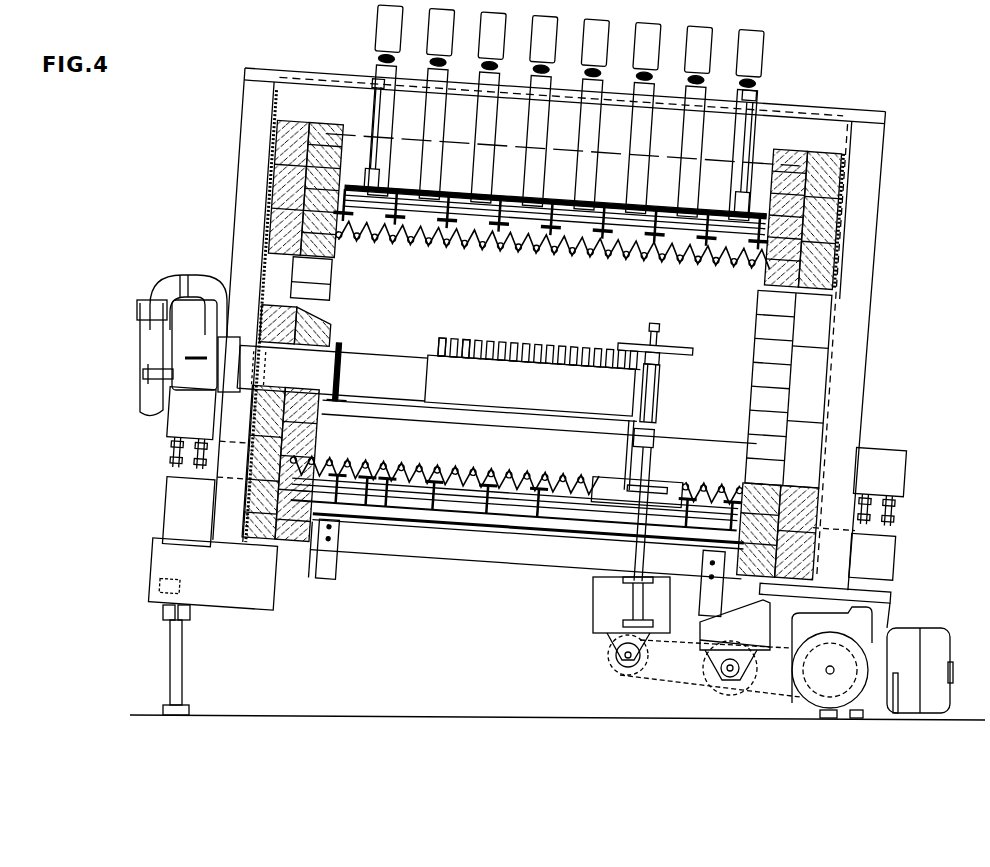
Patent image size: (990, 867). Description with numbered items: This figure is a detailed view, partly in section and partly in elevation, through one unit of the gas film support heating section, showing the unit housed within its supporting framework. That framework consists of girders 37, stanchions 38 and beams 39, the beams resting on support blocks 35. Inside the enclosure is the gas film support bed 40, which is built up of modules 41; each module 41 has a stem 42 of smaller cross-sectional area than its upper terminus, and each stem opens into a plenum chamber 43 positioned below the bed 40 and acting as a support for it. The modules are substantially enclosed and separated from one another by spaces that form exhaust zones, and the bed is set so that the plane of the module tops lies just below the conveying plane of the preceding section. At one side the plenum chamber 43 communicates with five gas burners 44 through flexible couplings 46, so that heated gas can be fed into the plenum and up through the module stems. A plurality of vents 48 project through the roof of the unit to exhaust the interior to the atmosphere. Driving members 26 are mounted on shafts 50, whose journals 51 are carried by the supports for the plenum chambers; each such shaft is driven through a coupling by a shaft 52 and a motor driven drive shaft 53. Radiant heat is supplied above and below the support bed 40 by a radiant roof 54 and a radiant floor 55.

The driving members 26 is at (693, 352).
The support blocks 35 is at (279, 597).
The girders 37 is at (283, 100).
The stanchions 38 is at (244, 113).
The beams 39 is at (330, 58).
The bed 40 is at (670, 346).
The module 41 is at (437, 343).
The stem 42 is at (471, 352).
The plenum chamber 43 is at (553, 398).
The gas burners 44 is at (215, 345).
The flexible couplings 46 is at (362, 340).
The vents 48 is at (757, 84).
The shafts 50 is at (665, 398).
The journals 51 is at (659, 446).
The shaft 52 is at (642, 556).
The motor driven drive shaft 53 is at (612, 662).
The radiant roof 54 is at (521, 252).
The radiant floor 55 is at (504, 454).